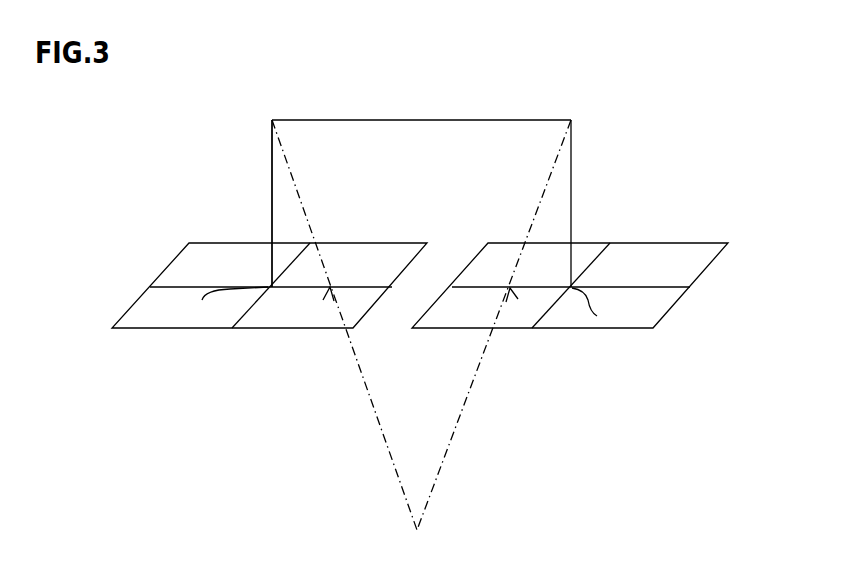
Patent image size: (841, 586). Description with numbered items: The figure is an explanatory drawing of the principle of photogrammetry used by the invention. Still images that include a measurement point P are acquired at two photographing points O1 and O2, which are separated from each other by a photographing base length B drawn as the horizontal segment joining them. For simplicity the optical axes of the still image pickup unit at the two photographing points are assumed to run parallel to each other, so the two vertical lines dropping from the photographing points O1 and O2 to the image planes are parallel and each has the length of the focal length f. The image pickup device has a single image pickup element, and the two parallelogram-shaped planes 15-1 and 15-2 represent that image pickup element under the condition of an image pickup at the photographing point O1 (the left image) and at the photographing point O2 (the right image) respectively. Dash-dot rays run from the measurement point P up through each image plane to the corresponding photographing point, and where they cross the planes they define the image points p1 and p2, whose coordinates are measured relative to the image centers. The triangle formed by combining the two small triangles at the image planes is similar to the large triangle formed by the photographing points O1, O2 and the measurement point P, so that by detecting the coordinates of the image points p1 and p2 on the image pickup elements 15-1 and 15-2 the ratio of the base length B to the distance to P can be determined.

The image pickup element 15-1 is at (170, 262).
The image pickup element 15-2 is at (683, 227).
The photographing base length B is at (421, 108).
The focal length f is at (264, 203).
The photographing point O1 is at (266, 191).
The photographing point O2 is at (570, 191).
The measurement point P is at (421, 341).
The image point p1 is at (330, 287).
The image point p2 is at (510, 288).